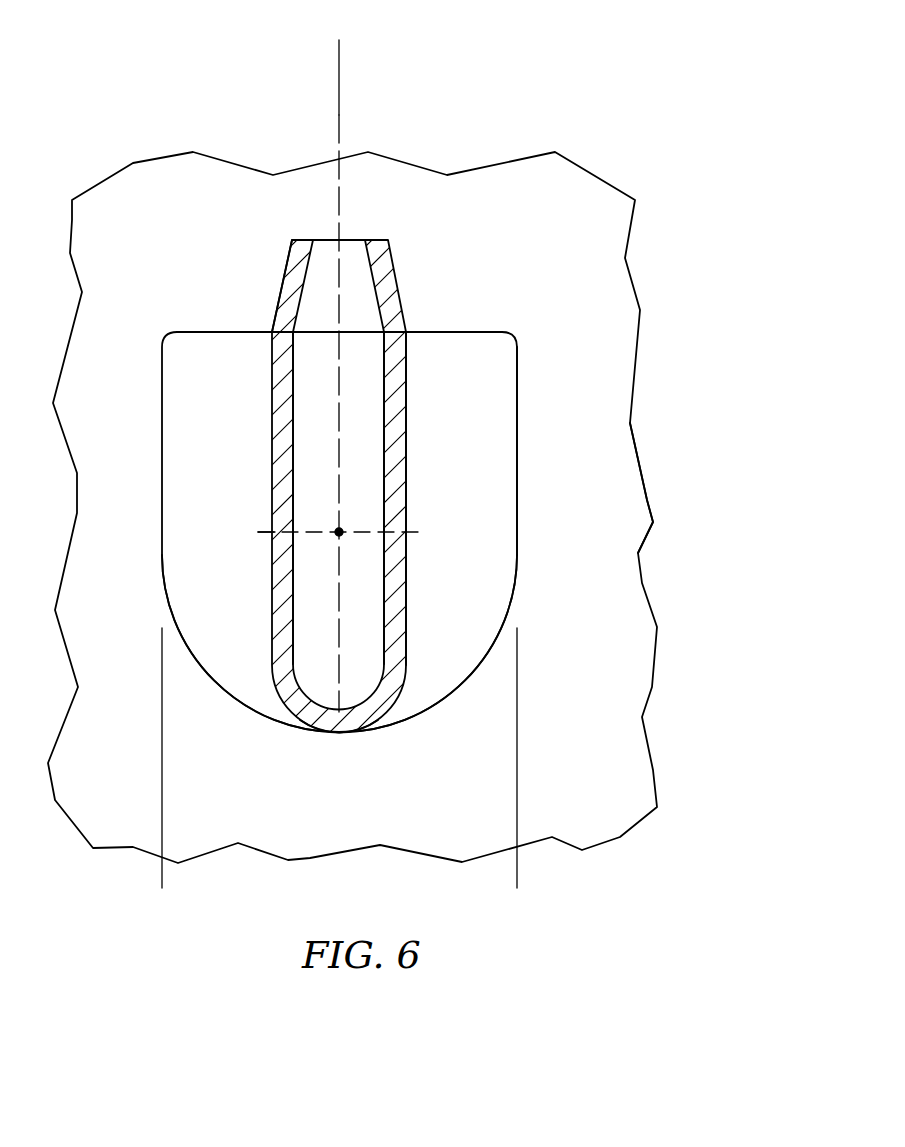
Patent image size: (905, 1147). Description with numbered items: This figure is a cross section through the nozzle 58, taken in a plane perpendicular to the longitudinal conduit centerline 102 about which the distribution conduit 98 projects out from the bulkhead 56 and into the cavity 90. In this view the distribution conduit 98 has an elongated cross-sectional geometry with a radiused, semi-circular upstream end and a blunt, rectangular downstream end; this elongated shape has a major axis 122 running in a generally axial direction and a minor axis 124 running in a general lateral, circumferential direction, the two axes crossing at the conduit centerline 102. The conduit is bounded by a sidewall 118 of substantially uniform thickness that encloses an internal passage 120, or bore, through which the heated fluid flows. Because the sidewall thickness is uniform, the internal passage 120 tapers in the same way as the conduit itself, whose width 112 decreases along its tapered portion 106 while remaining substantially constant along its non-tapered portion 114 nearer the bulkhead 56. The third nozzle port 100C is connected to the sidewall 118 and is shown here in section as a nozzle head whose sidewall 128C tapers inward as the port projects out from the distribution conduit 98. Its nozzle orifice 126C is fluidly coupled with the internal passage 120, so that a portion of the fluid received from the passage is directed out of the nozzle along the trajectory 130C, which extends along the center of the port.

The cavity 90 is at (183, 254).
The bulkhead 56 is at (643, 335).
The nozzle 58 is at (503, 308).
The third nozzle port 100C is at (412, 276).
The sidewall of third nozzle port 128C is at (293, 263).
The nozzle orifice of third nozzle port 126C is at (355, 247).
The trajectory of third nozzle port 130C is at (339, 52).
The internal passage 120 is at (320, 465).
The major axis 122 is at (380, 402).
The sidewall 118 is at (410, 452).
The longitudinal conduit centerline 102 is at (345, 538).
The minor axis 124 is at (262, 533).
The non-tapered portion 114 is at (522, 542).
The tapered portion 106 is at (504, 615).
The distribution conduit 98 is at (338, 742).
The width 112 is at (517, 882).